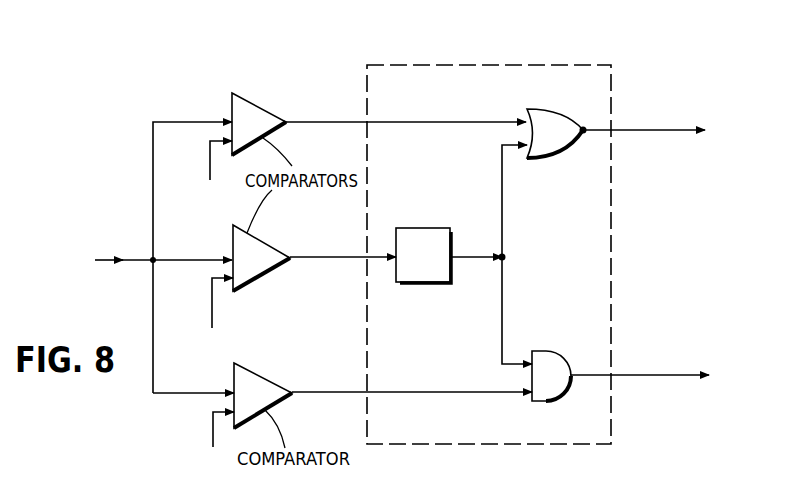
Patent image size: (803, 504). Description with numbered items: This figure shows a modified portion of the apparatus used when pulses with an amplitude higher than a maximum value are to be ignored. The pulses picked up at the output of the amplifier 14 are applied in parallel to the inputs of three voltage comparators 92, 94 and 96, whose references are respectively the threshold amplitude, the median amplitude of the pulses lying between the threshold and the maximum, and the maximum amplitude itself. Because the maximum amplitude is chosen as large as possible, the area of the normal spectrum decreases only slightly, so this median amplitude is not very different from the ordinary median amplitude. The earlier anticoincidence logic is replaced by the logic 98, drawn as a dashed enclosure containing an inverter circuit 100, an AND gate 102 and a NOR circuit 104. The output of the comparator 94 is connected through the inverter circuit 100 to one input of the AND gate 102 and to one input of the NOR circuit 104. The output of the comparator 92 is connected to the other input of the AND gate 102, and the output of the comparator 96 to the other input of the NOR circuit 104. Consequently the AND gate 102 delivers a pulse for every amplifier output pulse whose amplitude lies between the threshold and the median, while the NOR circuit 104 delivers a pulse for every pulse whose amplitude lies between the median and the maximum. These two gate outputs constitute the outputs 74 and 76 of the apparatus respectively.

The amplifier 14 is at (150, 257).
The voltage comparator 92 is at (258, 375).
The voltage comparator 94 is at (258, 239).
The voltage comparator 96 is at (253, 104).
The logic 98 is at (466, 65).
The inverter circuit 100 is at (420, 284).
The AND gate 102 is at (546, 352).
The NOR circuit 104 is at (540, 158).
The output 74 is at (618, 375).
The output 76 is at (613, 131).